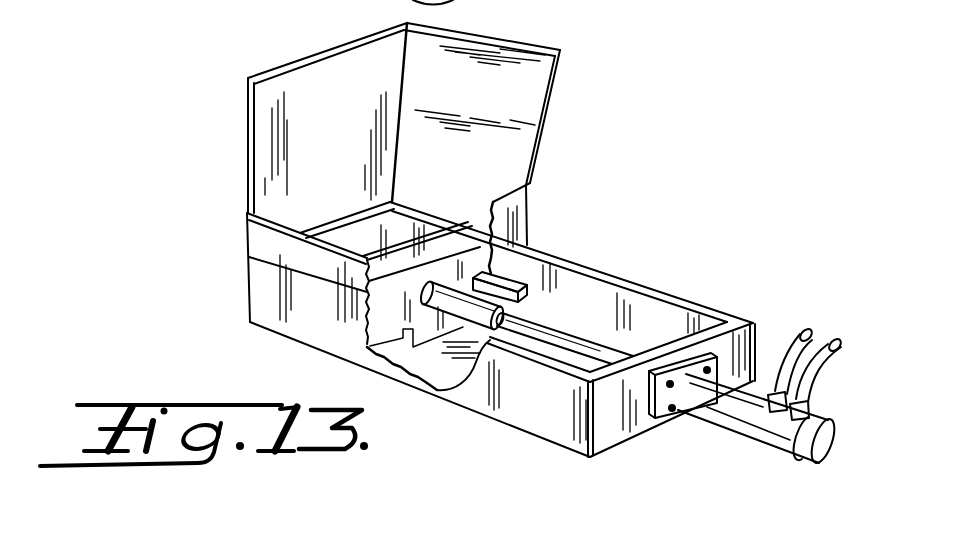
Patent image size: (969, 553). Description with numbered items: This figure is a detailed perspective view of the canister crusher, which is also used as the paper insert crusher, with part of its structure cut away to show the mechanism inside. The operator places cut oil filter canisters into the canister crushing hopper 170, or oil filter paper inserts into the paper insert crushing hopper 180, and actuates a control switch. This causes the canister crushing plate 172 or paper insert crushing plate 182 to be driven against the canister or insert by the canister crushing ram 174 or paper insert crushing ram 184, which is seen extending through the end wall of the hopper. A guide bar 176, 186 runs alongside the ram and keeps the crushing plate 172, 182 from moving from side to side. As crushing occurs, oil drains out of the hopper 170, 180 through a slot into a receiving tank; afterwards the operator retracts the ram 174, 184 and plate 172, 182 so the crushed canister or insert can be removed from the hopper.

The canister crushing hopper 170 is at (501, 240).
The paper insert crushing hopper 180 is at (415, 238).
The canister crushing plate 172 is at (598, 240).
The paper insert crushing plate 182 is at (488, 270).
The guide bar 176 is at (590, 277).
The guide bar 186 is at (525, 282).
The canister crushing ram 174 is at (670, 361).
The paper insert crushing ram 184 is at (565, 335).